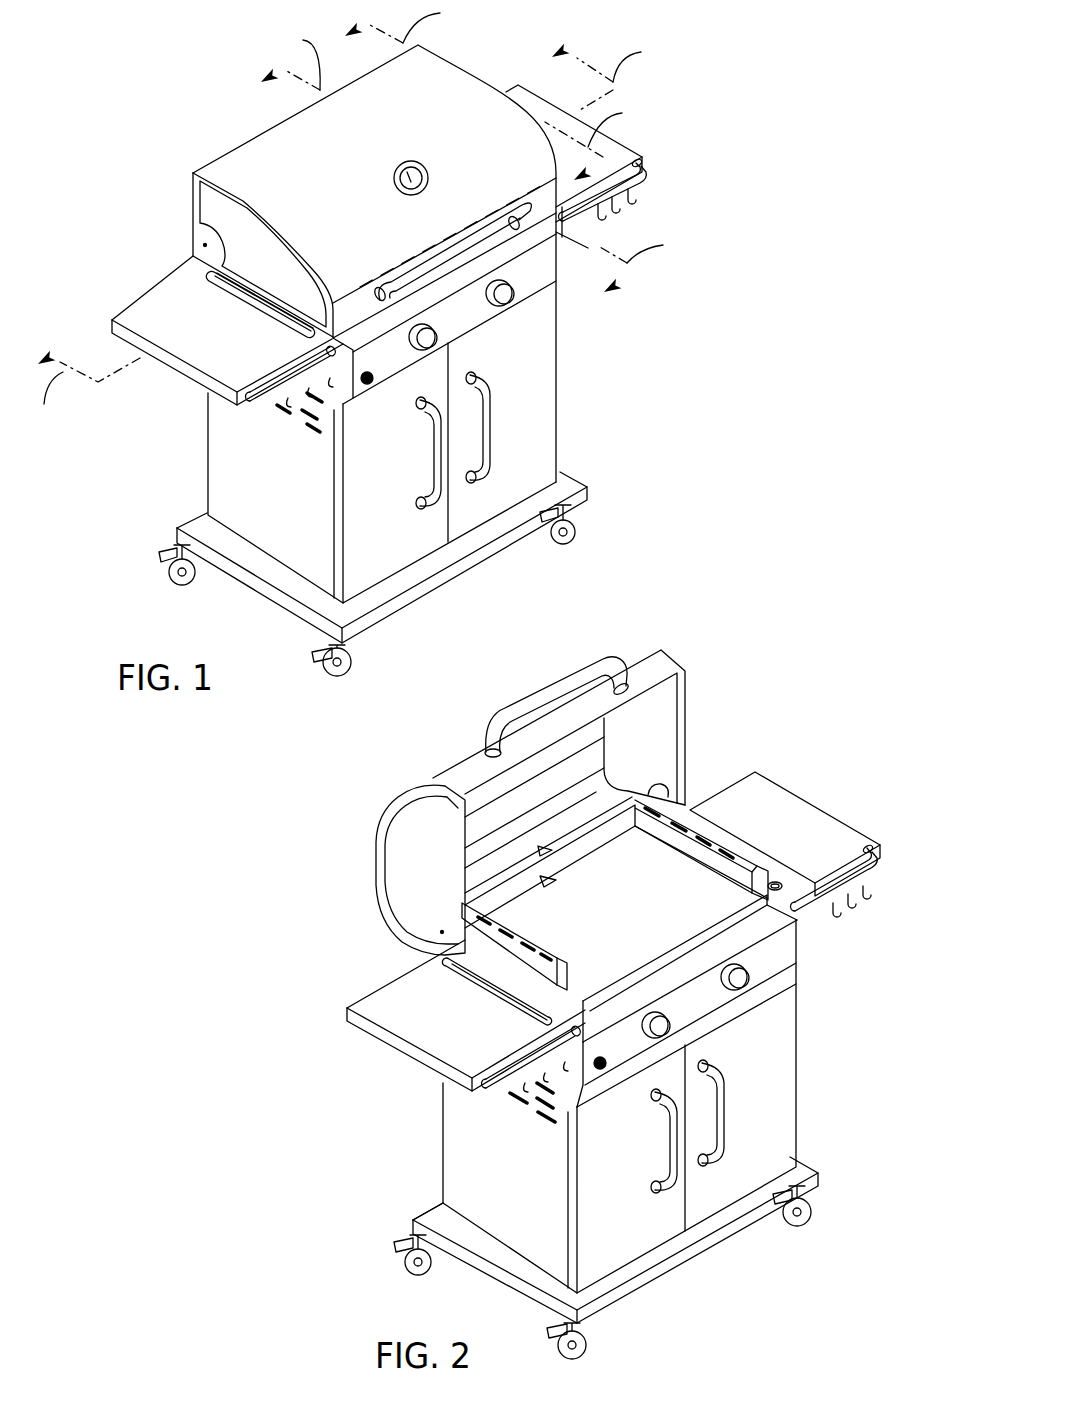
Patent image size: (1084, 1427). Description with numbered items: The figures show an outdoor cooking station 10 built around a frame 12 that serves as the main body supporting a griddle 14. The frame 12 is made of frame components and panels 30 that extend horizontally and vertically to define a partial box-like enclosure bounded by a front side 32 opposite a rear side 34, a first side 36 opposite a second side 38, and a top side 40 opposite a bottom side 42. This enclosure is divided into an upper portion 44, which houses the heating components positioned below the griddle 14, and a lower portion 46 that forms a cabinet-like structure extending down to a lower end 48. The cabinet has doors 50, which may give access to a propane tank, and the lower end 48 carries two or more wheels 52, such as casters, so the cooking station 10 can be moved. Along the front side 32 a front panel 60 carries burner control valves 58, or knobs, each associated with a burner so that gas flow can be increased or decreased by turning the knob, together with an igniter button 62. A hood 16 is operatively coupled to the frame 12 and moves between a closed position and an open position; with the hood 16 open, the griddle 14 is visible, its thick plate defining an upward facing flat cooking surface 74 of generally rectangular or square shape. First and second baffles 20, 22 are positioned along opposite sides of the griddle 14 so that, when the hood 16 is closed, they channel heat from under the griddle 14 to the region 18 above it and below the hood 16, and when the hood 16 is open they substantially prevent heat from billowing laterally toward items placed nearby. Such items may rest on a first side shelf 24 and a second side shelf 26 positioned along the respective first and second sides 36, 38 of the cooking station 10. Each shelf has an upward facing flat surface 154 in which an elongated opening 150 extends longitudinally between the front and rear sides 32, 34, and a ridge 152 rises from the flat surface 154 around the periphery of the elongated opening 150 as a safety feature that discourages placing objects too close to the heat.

In FIG. 1, the outdoor cooking station 10 is at (787, 57).
In FIG. 2, the outdoor cooking station 10 is at (252, 940).
In FIG. 1, the frame 12 is at (192, 455).
In FIG. 2, the frame 12 is at (424, 1138).
In FIG. 2, the griddle 14 is at (733, 905).
In FIG. 1, the hood 16 is at (492, 56).
In FIG. 2, the hood 16 is at (702, 690).
In FIG. 2, the region above the griddle 18 is at (716, 782).
In FIG. 2, the first baffle 20 is at (447, 955).
In FIG. 2, the second baffle 22 is at (730, 835).
In FIG. 1, the first side shelf 24 is at (163, 305).
In FIG. 2, the first side shelf 24 is at (375, 1010).
In FIG. 1, the second side shelf 26 is at (632, 147).
In FIG. 2, the second side shelf 26 is at (830, 823).
In FIG. 2, the panels 30 is at (443, 1183).
In FIG. 2, the front side 32 is at (866, 1036).
In FIG. 2, the rear side 34 is at (333, 884).
In FIG. 2, the first side 36 is at (283, 1122).
In FIG. 2, the second side 38 is at (868, 745).
In FIG. 2, the top side 40 is at (703, 645).
In FIG. 2, the bottom side 42 is at (663, 1330).
In FIG. 2, the upper portion 44 is at (828, 977).
In FIG. 2, the lower portion 46 is at (813, 1112).
In FIG. 2, the lower end 48 is at (748, 1227).
In FIG. 2, the doors 50 is at (768, 1142).
In FIG. 2, the wheels 52 is at (407, 1262).
In FIG. 2, the burner control valves 58 is at (743, 982).
In FIG. 2, the front panel 60 is at (620, 1047).
In FIG. 2, the igniter button 62 is at (597, 1077).
In FIG. 2, the cooking surface 74 is at (583, 970).
In FIG. 2, the elongated opening 150 is at (480, 983).
In FIG. 2, the ridge 152 is at (503, 1003).
In FIG. 2, the upward facing flat surface 154 is at (470, 1058).